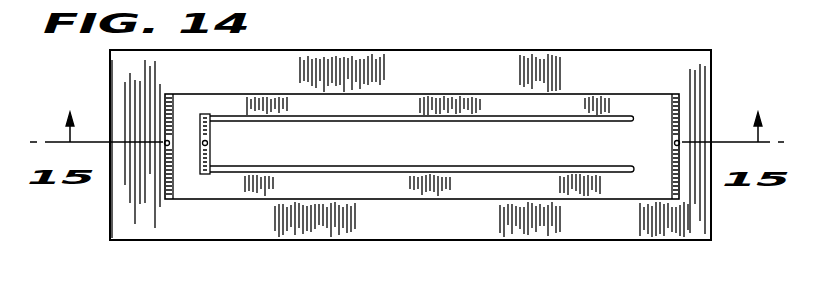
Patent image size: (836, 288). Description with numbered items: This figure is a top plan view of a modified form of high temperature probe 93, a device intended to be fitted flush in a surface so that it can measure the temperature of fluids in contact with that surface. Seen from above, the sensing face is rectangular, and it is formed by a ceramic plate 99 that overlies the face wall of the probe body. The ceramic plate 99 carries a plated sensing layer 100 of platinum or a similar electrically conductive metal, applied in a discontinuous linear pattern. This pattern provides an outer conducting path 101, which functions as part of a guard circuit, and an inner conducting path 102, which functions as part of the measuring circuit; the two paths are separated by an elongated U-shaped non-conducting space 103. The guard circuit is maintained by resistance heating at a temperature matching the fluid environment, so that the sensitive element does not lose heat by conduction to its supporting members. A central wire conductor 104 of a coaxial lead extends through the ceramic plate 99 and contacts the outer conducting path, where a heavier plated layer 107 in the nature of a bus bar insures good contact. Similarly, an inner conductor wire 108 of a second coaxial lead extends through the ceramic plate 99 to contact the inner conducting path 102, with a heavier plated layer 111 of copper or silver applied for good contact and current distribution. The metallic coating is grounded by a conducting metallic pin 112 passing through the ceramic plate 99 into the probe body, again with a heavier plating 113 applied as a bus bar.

The high temperature probe 93 is at (668, 49).
The ceramic plate 99 is at (125, 222).
The plated sensing layer 100 is at (426, 92).
The outer conducting path 101 is at (332, 100).
The inner conducting path 102 is at (500, 160).
The U-shaped non-conducting space 103 is at (404, 171).
The central wire conductor 104 is at (164, 141).
The heavier plated layer 107 is at (165, 100).
The inner conductor wire 108 is at (204, 146).
The heavier plated layer 111 is at (213, 152).
The conducting metallic pin 112 is at (680, 142).
The heavier plating 113 is at (676, 107).